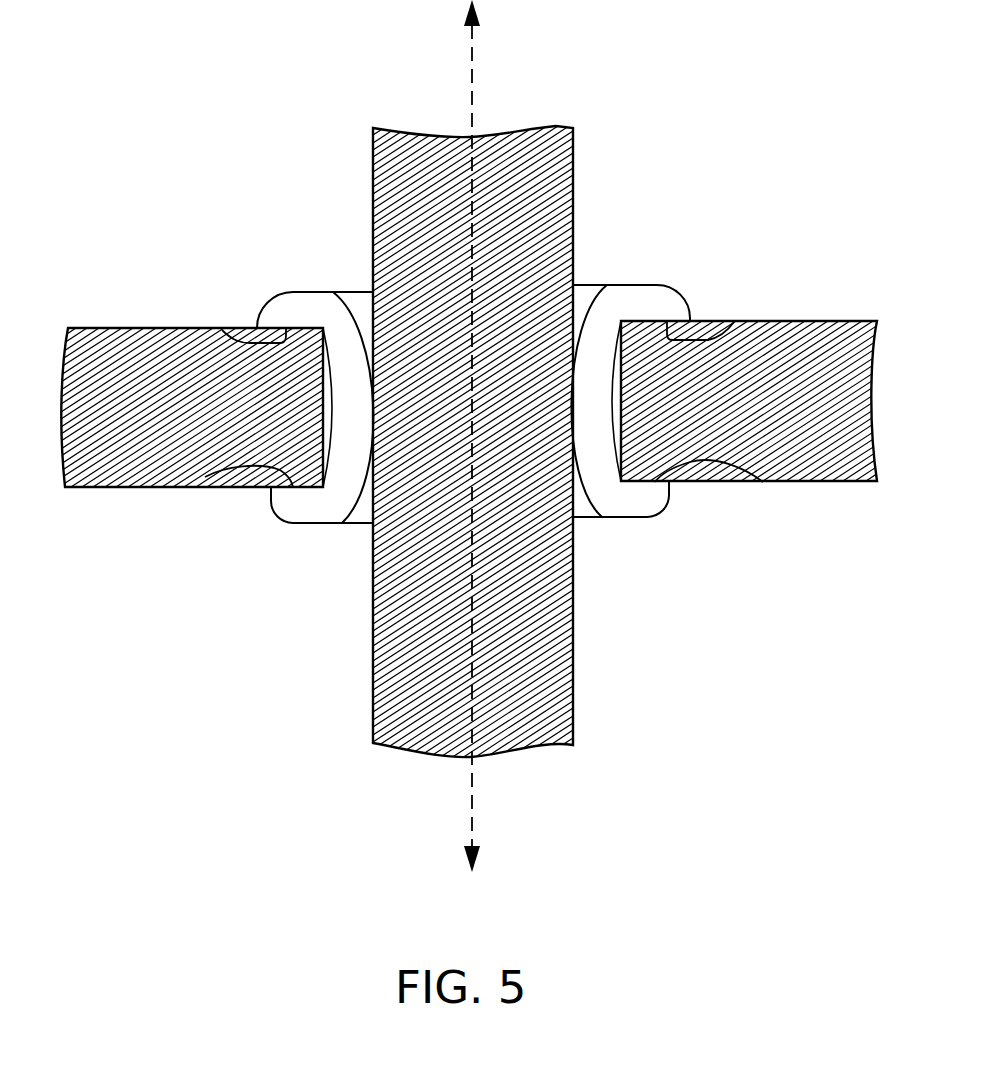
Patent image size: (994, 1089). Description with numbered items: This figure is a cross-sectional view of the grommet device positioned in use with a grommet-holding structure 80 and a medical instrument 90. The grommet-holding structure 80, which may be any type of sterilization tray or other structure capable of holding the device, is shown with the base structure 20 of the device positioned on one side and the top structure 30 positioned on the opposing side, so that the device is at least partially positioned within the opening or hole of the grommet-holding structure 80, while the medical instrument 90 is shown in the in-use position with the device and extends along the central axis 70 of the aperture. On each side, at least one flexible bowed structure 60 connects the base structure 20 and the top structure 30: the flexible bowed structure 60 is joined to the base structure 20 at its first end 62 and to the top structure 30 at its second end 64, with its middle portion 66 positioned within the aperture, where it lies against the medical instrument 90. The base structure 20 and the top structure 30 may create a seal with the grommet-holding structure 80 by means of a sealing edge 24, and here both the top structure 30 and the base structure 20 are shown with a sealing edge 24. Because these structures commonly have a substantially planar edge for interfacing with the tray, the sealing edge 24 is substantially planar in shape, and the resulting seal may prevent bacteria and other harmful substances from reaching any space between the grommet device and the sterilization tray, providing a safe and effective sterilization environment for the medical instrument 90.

The base structure 20 is at (474, 405).
The sealing edge 24 is at (222, 330).
The top structure 30 is at (283, 310).
The flexible bowed structure 60 is at (474, 373).
The first end 62 is at (340, 500).
The second end 64 is at (352, 333).
The middle portion 66 is at (367, 411).
The central axis 70 is at (473, 88).
The grommet-holding structure 80 is at (132, 365).
The medical instrument 90 is at (573, 128).